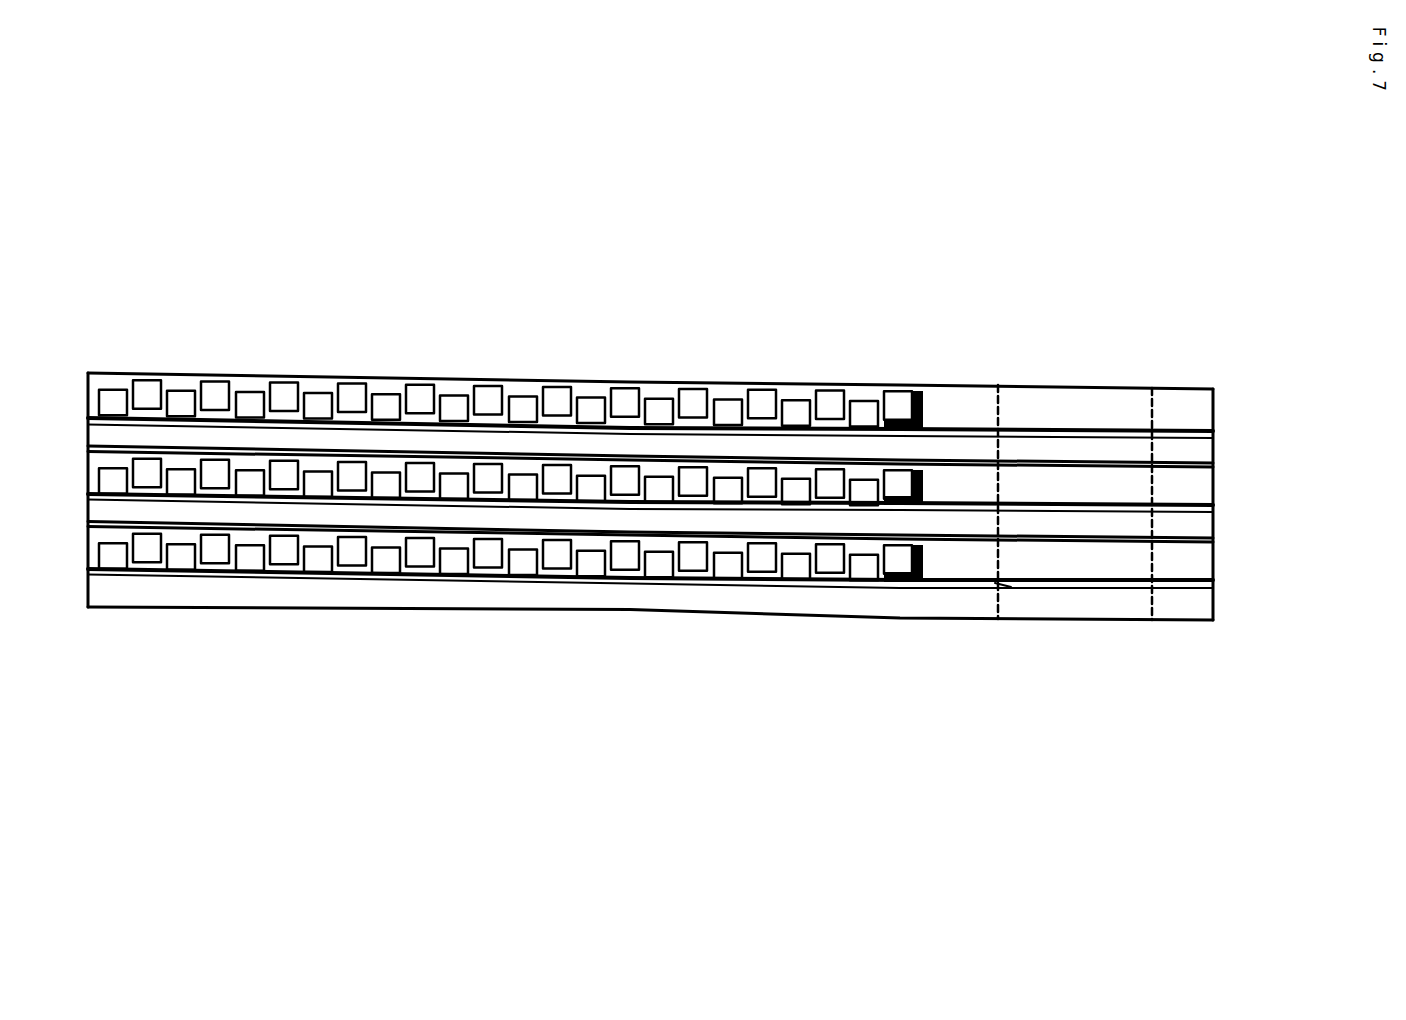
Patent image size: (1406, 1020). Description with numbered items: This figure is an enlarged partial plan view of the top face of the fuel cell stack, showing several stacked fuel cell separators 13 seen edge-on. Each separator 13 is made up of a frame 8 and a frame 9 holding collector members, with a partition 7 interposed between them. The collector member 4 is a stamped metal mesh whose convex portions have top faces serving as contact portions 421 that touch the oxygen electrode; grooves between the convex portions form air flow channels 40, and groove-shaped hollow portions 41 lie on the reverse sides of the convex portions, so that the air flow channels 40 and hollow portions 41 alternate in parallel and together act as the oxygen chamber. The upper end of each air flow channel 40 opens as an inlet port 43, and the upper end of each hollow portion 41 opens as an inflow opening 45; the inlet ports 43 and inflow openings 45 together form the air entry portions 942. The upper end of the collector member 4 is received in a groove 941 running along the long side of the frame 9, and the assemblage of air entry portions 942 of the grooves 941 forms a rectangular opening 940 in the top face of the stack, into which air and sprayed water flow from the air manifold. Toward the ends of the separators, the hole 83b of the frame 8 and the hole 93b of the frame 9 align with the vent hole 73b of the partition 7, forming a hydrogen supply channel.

The rectangular opening 940 is at (78, 312).
The collector member 4 is at (502, 388).
The contact portion 421 is at (378, 387).
The inlet port 43 is at (555, 400).
The air flow channel 40 is at (570, 362).
The inflow opening 45 is at (589, 409).
The hollow portion 41 is at (620, 346).
The groove 941 is at (835, 403).
The air entry portion 942 is at (905, 482).
The first layer 7 is at (970, 428).
The frame 9 is at (1017, 403).
The frame 8 is at (1125, 452).
The fuel cell separator 13 is at (1223, 390).
The hole 83b is at (999, 609).
The vent hole 73b is at (1003, 585).
The hole 93b is at (1150, 565).